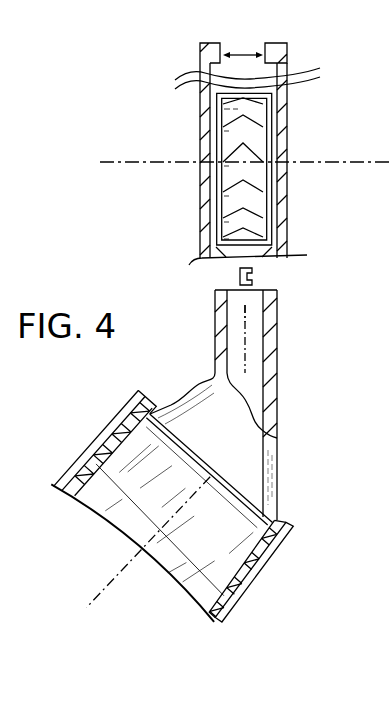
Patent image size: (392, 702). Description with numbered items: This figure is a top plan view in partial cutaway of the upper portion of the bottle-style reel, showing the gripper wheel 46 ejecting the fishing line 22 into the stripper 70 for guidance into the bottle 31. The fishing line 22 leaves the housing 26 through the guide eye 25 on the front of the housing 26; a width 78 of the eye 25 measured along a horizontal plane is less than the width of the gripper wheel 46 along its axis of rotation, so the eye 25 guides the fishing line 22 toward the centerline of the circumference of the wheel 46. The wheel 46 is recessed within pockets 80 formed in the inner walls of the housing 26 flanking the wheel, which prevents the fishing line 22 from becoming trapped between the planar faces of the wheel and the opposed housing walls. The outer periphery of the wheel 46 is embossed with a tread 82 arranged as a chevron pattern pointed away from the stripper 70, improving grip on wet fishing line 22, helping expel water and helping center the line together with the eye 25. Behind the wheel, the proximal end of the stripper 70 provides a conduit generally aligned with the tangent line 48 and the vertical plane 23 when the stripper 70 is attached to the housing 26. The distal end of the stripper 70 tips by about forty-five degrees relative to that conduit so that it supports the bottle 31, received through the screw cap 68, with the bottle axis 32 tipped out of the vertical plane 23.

The fishing line 22 is at (255, 280).
The vertical plane 23 is at (246, 356).
The guide eye 25 is at (192, 37).
The housing 26 is at (203, 118).
The bottle 31 is at (242, 583).
The bottle axis 32 is at (124, 575).
The gripper wheel 46 is at (266, 137).
The tangent line 48 is at (245, 318).
The screw cap 68 is at (118, 426).
The stripper 70 is at (277, 390).
The width 78 is at (245, 52).
The pockets 80 is at (200, 216).
The tread 82 is at (268, 160).